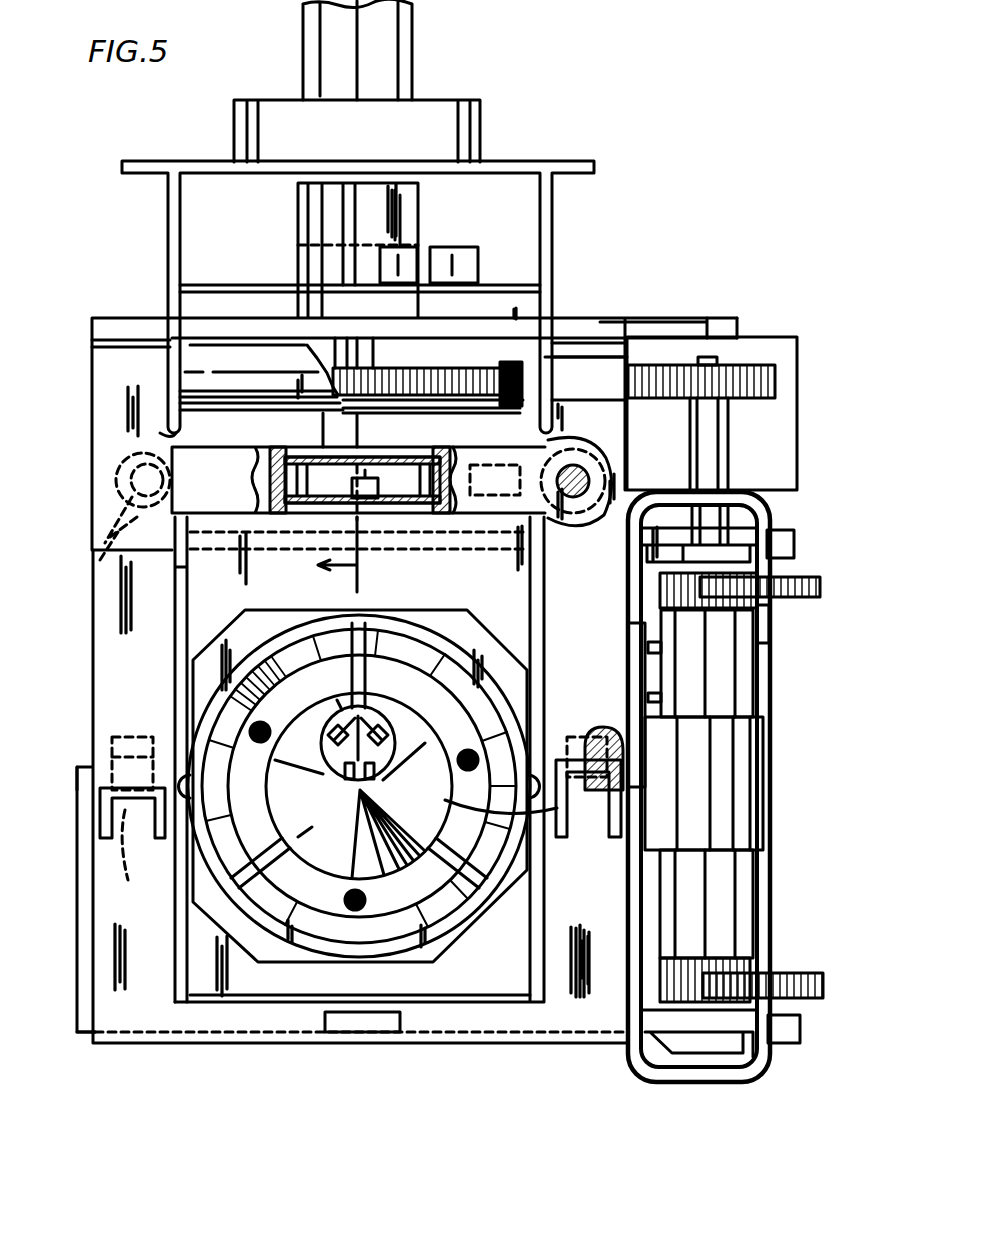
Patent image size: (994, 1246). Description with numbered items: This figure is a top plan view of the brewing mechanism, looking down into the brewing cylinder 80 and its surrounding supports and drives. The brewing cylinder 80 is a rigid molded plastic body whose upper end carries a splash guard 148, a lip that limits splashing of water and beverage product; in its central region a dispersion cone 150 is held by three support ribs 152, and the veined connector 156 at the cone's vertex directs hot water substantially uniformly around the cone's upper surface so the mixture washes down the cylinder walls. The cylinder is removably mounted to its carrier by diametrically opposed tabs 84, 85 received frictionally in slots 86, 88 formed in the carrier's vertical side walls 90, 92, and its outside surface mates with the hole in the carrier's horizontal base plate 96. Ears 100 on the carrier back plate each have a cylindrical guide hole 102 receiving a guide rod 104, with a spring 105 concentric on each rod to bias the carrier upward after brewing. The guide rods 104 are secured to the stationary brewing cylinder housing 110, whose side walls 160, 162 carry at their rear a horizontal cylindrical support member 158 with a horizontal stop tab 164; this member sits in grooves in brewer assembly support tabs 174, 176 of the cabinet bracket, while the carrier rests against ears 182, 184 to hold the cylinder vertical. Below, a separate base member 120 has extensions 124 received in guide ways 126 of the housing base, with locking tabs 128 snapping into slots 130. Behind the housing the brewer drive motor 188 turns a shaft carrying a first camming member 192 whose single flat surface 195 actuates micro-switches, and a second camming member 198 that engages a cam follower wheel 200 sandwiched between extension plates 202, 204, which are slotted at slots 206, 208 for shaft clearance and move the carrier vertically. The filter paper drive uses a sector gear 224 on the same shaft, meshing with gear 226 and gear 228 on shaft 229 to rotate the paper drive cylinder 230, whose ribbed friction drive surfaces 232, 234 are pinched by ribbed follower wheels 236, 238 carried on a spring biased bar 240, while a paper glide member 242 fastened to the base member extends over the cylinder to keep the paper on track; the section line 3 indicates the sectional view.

The section line 3 is at (350, 555).
The brewing cylinder 80 is at (348, 612).
The tab 84 is at (180, 870).
The tab 85 is at (462, 630).
The slot 86 is at (185, 690).
The slot 88 is at (548, 740).
The vertical side wall 90 is at (170, 1003).
The vertical side wall 92 is at (538, 932).
The horizontal base plate 96 is at (275, 1002).
The ears 100 is at (95, 556).
The cylindrical guide hole 102 is at (118, 508).
The guide rod 104 is at (582, 520).
The spring 105 is at (606, 470).
The stationary brewing cylinder housing 110 is at (98, 312).
The base member 120 is at (300, 1045).
The extension 124 is at (122, 854).
The guide way 126 is at (92, 760).
The locking tab 128 is at (148, 719).
The slot 130 is at (122, 815).
The splash guard 148 is at (272, 700).
The dispersion cone 150 is at (330, 860).
The support rib 152 is at (385, 718).
The veined connector 156 is at (390, 701).
The horizontal cylindrical support member 158 is at (262, 362).
The side wall 160 is at (118, 383).
The side wall 162 is at (606, 443).
The horizontal stop tab 164 is at (553, 330).
The brewer assembly support tab 174 is at (168, 437).
The brewer assembly support tab 176 is at (606, 420).
The ear 182 is at (235, 318).
The ear 184 is at (500, 330).
The brewer drive motor 188 is at (412, 63).
The first camming member 192 is at (300, 200).
The flat surface 195 is at (415, 218).
The second camming member 198 is at (325, 455).
The cam follower wheel 200 is at (432, 462).
The extension plate 202 is at (310, 500).
The extension plate 204 is at (282, 455).
The slot 206 is at (385, 500).
The slot 208 is at (380, 458).
The sector gear 224 is at (465, 372).
The gear 226 is at (560, 336).
The gear 228 is at (778, 385).
The shaft 229 is at (712, 435).
The paper drive cylinder 230 is at (730, 690).
The friction drive surface 232 is at (760, 965).
The friction drive surface 234 is at (770, 612).
The ribbed follower wheel 236 is at (824, 985).
The ribbed follower wheel 238 is at (822, 585).
The spring biased bar 240 is at (692, 1075).
The paper glide member 242 is at (725, 790).